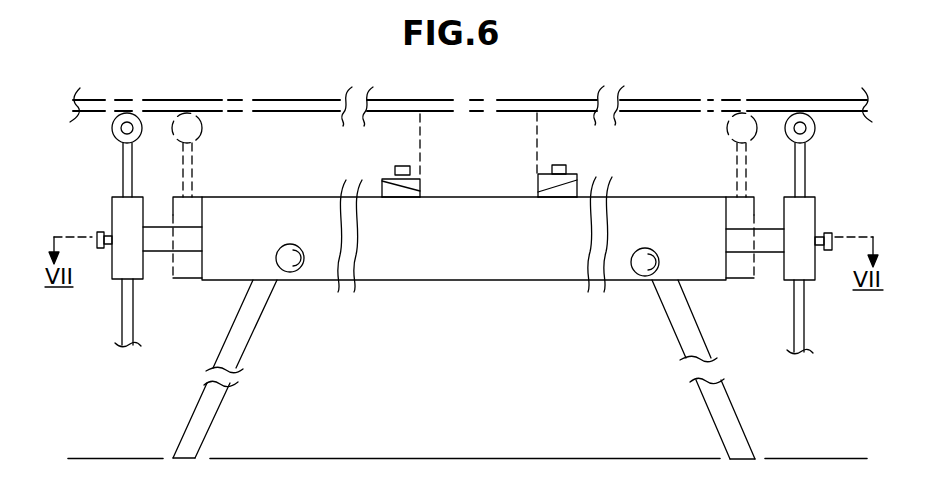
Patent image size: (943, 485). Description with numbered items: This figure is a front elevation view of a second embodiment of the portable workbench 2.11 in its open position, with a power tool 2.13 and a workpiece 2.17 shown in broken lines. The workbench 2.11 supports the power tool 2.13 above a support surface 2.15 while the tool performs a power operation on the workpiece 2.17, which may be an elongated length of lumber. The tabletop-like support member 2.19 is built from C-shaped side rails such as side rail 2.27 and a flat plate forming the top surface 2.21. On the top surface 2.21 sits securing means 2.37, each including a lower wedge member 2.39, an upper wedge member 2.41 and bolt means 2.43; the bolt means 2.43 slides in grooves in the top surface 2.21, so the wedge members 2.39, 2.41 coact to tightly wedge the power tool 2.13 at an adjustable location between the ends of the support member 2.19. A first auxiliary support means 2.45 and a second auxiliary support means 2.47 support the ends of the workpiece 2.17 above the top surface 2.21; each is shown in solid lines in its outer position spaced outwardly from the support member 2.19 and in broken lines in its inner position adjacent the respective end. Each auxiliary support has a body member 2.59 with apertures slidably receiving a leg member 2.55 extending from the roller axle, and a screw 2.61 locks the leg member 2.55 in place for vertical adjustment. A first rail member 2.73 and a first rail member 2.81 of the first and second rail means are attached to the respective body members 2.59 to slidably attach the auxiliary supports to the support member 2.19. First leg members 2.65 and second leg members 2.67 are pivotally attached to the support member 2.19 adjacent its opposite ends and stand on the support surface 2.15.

The portable workbench 2.11 is at (712, 60).
The power tool 2.13 is at (493, 137).
The support surface 2.15 is at (380, 458).
The workpiece 2.17 is at (268, 107).
The support member 2.19 is at (224, 190).
The top surface 2.21 is at (712, 170).
The C-shaped side rail 2.27 is at (465, 282).
The securing means 2.37 is at (376, 172).
The lower wedge member 2.39 is at (382, 190).
The upper wedge member 2.41 is at (393, 177).
The bolt means 2.43 is at (403, 165).
The first auxiliary support means 2.45 is at (758, 166).
The second auxiliary support means 2.47 is at (176, 166).
The leg member 2.55 is at (126, 304).
The body member 2.59 is at (126, 209).
The screw 2.61 is at (101, 232).
The first leg member 2.65 is at (727, 433).
The second leg member 2.67 is at (206, 423).
The first rail member 2.73 is at (772, 245).
The first rail member 2.81 is at (157, 242).